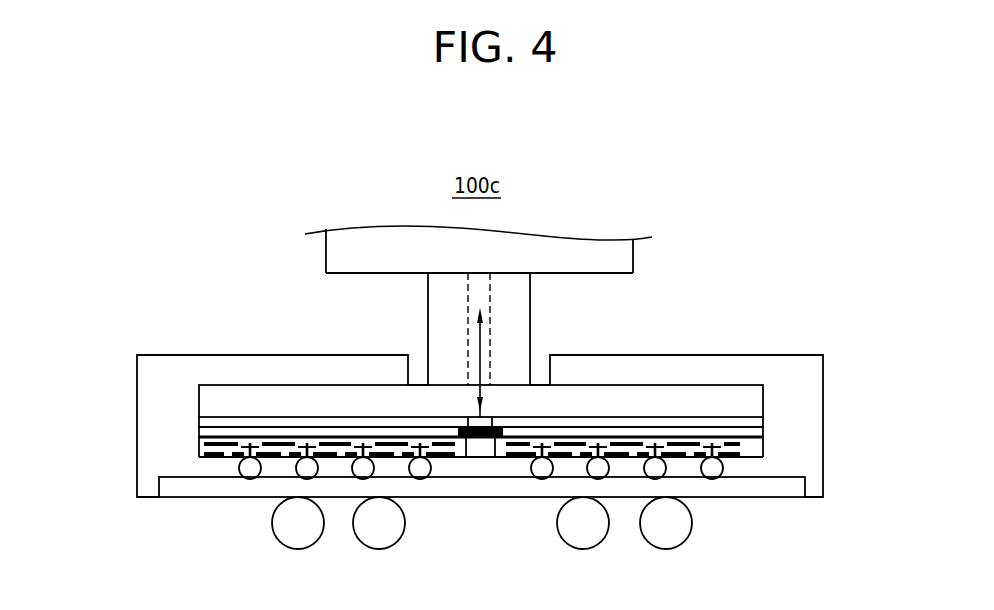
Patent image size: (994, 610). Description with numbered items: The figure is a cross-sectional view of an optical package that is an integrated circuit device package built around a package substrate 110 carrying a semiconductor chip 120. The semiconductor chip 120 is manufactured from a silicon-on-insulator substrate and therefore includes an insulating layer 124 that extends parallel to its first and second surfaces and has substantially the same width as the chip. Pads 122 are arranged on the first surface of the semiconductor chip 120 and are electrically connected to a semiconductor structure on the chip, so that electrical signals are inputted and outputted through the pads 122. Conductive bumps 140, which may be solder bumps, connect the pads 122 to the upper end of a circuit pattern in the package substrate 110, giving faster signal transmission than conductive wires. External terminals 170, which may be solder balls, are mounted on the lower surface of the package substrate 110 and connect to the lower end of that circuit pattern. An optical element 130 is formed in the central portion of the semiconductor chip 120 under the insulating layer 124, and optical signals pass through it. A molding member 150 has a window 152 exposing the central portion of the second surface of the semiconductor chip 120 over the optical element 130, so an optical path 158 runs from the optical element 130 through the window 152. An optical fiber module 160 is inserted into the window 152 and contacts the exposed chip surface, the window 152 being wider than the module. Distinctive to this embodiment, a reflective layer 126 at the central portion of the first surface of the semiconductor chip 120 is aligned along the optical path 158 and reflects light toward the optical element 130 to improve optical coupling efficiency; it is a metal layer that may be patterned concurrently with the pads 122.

The package substrate 110 is at (800, 483).
The semiconductor chip 120 is at (755, 398).
The pads 122 is at (200, 443).
The insulating layer 124 is at (755, 422).
The reflective layer 126 is at (494, 457).
The optical element 130 is at (480, 457).
The conductive bumps 140 is at (723, 468).
The molding member 150 is at (812, 370).
The window 152 is at (540, 363).
The optical path 158 is at (478, 333).
The optical fiber module 160 is at (428, 298).
The external terminals 170 is at (675, 530).